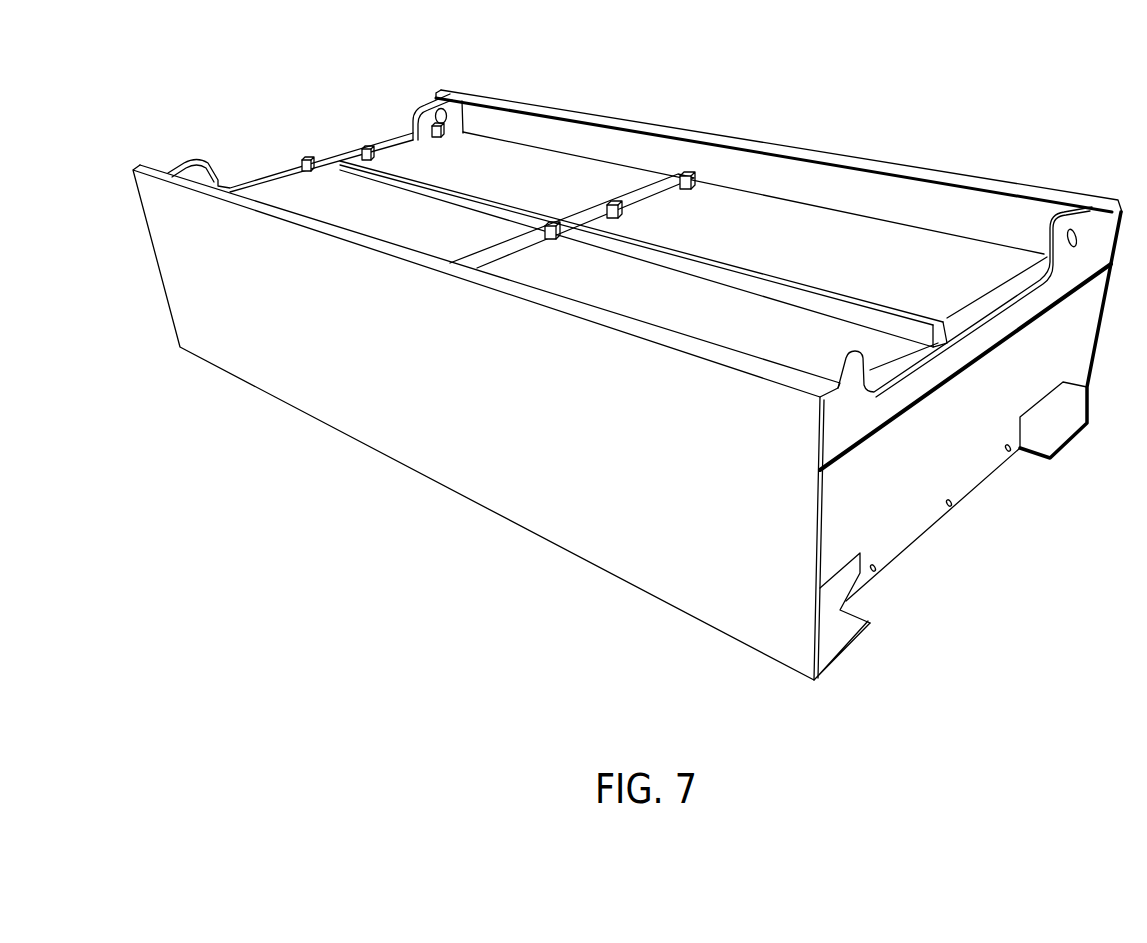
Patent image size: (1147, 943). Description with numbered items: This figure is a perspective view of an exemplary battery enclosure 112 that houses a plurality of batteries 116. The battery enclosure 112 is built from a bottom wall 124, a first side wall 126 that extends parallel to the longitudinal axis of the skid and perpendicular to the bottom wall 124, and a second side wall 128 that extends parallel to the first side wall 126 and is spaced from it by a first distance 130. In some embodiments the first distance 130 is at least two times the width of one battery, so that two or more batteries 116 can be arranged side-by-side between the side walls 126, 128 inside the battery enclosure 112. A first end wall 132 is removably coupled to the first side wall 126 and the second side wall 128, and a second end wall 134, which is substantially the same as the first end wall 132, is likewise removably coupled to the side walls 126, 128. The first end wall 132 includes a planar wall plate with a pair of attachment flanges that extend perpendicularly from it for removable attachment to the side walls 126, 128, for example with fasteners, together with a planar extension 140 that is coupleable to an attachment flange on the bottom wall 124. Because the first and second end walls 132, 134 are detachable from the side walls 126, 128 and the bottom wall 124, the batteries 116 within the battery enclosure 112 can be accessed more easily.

The battery enclosure 112 is at (862, 78).
The batteries 116 is at (300, 187).
The bottom wall 124 is at (1054, 441).
The first side wall 126 is at (468, 411).
The second side wall 128 is at (1040, 172).
The first distance 130 is at (840, 445).
The first end wall 132 is at (960, 470).
The second end wall 134 is at (412, 108).
The planar extension 140 is at (897, 586).